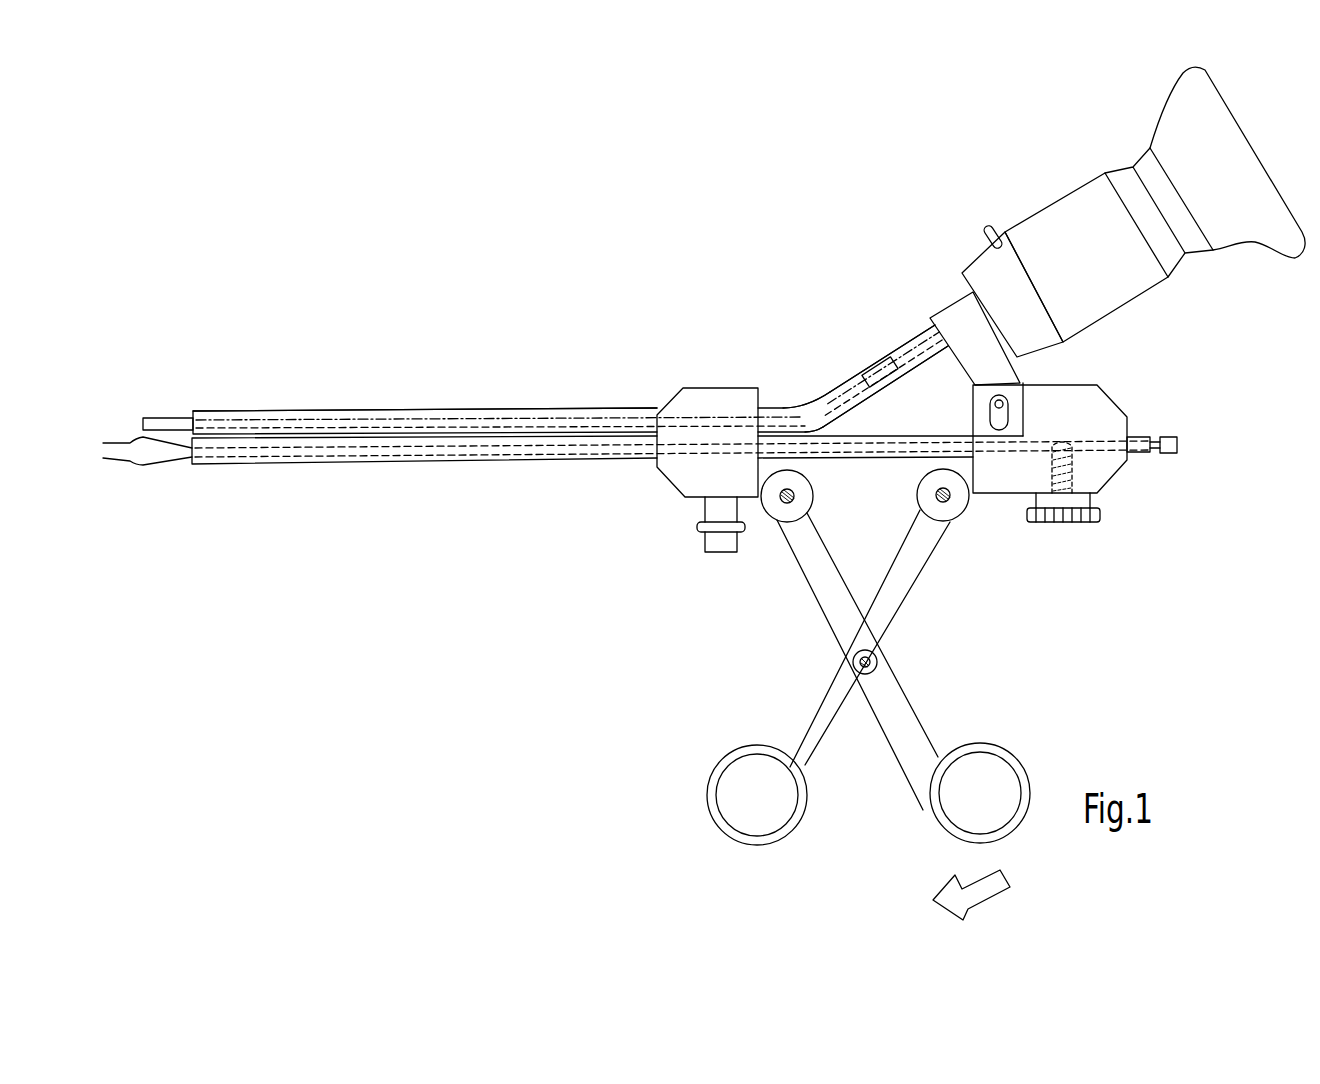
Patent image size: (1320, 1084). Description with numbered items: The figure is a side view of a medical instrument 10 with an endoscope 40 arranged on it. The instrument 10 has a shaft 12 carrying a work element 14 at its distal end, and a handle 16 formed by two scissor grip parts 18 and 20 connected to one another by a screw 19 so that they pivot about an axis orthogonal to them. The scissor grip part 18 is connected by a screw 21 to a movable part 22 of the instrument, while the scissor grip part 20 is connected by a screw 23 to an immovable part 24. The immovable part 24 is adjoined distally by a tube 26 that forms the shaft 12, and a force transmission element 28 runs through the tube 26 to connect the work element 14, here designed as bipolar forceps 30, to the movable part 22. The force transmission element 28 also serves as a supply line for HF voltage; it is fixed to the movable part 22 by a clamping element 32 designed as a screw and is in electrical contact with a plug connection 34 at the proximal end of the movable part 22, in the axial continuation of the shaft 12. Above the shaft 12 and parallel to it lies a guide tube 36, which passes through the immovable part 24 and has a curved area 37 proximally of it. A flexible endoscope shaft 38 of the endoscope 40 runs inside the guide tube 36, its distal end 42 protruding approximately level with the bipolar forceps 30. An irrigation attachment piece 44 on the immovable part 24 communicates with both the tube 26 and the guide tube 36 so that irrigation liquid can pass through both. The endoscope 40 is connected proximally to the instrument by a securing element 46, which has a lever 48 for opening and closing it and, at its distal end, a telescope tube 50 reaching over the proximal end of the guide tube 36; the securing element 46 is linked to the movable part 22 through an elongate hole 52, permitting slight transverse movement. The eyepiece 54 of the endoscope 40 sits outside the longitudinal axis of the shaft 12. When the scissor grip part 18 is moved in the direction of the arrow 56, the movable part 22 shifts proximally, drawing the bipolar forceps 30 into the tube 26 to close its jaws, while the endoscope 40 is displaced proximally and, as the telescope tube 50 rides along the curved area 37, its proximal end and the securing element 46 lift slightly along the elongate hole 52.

The medical instrument 10 is at (614, 272).
The shaft 12 is at (390, 500).
The work element 14 is at (154, 480).
The handle 16 is at (977, 603).
The scissor grip part 18 is at (900, 732).
The screw 19 is at (852, 660).
The scissor grip part 20 is at (833, 738).
The screw 21 is at (950, 503).
The movable part 22 is at (1113, 480).
The screw 23 is at (787, 505).
The immovable part 24 is at (667, 483).
The tube 26 is at (502, 462).
The force transmission element 28 is at (232, 460).
The bipolar forceps 30 is at (138, 465).
The clamping element 32 is at (1083, 527).
The plug connection 34 is at (1180, 445).
The guide tube 36 is at (445, 408).
The curved area 37 is at (808, 408).
The endoscope shaft 38 is at (346, 420).
The endoscope 40 is at (1027, 198).
The distal end 42 is at (163, 418).
The irrigation attachment piece 44 is at (705, 536).
The securing element 46 is at (945, 308).
The lever 48 is at (980, 234).
The telescope tube 50 is at (872, 362).
The elongate hole 52 is at (1010, 420).
The eyepiece 54 is at (1236, 248).
The arrow 56 is at (990, 888).